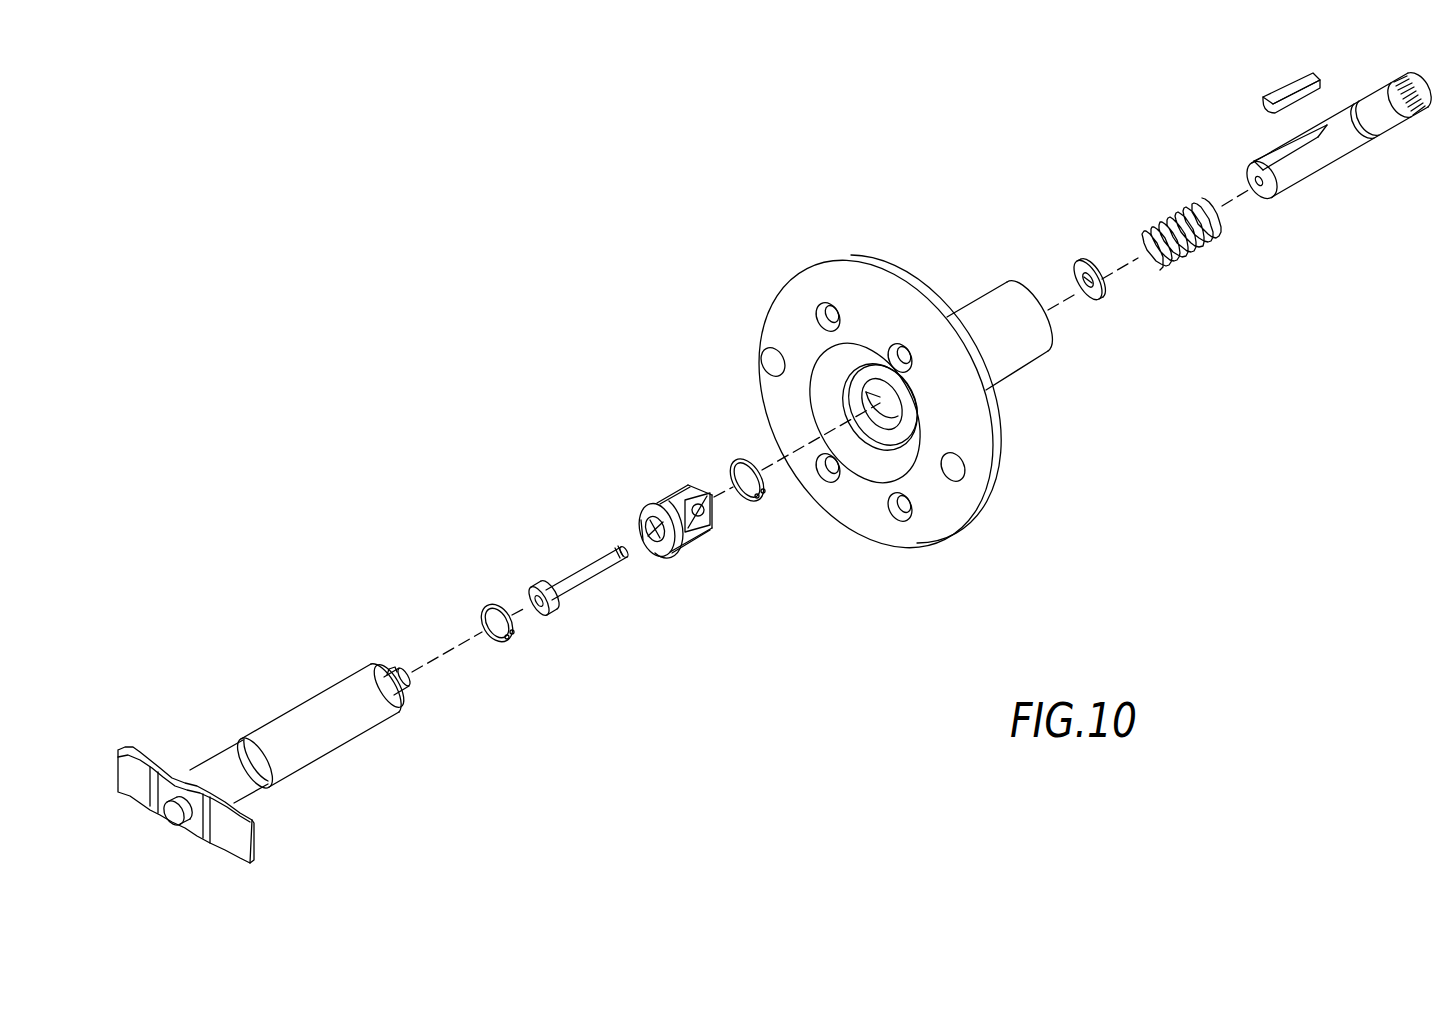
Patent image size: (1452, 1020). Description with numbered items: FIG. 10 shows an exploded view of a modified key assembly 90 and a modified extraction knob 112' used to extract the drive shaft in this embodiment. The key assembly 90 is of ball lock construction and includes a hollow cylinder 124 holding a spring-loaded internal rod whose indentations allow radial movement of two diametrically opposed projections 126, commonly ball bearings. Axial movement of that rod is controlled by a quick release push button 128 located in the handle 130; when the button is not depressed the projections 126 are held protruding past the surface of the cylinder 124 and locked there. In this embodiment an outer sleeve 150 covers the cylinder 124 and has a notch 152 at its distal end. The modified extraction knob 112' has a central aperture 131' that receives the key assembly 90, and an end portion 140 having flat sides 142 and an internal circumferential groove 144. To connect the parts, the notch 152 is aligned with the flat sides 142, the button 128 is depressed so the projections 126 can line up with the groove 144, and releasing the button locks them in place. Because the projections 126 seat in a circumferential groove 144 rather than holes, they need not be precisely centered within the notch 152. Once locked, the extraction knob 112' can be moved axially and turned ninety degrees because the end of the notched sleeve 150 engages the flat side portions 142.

The key assembly 90 is at (272, 655).
The modified extraction knob 112' is at (673, 500).
The hollow cylinder 124 is at (410, 680).
The projections 126 is at (389, 670).
The push button 128 is at (167, 817).
The handle 130 is at (221, 848).
The central aperture 131' is at (643, 557).
The end portion 140 is at (653, 502).
The flat sides 142 is at (640, 521).
The internal circumferential groove 144 is at (662, 550).
The outer sleeve 150 is at (322, 760).
The notch 152 is at (406, 702).